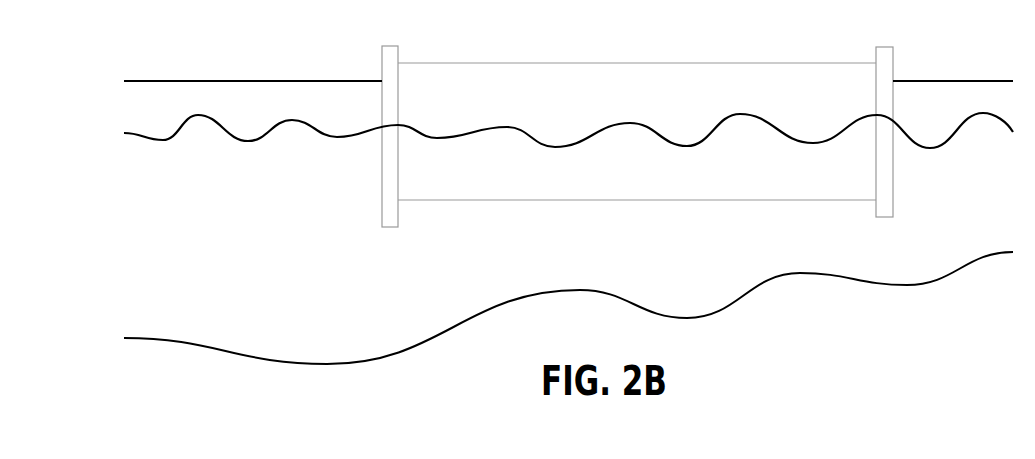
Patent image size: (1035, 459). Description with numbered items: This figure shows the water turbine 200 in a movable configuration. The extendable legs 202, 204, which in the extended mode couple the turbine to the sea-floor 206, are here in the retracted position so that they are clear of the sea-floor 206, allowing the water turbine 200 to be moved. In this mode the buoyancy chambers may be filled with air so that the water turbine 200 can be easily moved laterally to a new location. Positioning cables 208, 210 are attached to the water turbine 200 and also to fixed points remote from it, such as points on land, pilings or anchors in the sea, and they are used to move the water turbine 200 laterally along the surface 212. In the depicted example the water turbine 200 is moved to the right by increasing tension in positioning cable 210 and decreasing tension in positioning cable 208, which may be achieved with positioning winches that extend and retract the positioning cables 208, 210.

The water turbine 200 is at (483, 64).
The extendable leg 202 is at (382, 218).
The extendable leg 204 is at (893, 213).
The sea-floor 206 is at (190, 342).
The positioning cable 208 is at (244, 80).
The positioning cable 210 is at (958, 80).
The surface 212 is at (935, 146).